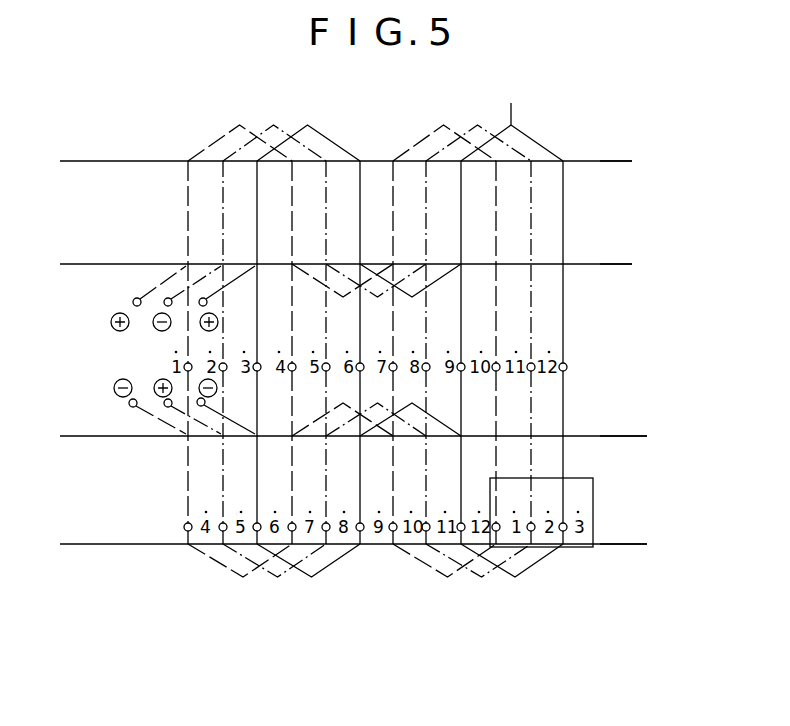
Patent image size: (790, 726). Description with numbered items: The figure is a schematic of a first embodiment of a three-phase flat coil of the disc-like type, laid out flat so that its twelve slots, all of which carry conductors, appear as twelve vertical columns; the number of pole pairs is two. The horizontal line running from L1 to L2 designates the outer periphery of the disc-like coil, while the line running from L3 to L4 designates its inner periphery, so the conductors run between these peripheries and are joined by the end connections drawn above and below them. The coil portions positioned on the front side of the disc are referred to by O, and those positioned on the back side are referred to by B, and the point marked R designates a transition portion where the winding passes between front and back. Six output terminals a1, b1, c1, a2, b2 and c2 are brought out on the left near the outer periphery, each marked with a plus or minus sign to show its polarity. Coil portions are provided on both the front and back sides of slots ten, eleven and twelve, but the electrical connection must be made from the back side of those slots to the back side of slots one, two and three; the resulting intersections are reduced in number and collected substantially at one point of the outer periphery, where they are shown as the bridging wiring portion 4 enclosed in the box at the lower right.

The bridging wiring portion 4 is at (595, 523).
The outer periphery line L1 is at (332, 355).
The outer periphery line L2 is at (638, 350).
The inner periphery line L3 is at (332, 353).
The inner periphery line L4 is at (638, 353).
The output terminal a1 is at (111, 327).
The output terminal b1 is at (153, 328).
The output terminal c1 is at (200, 326).
The output terminal a2 is at (115, 383).
The output terminal b2 is at (155, 383).
The output terminal c2 is at (200, 385).
The front side coil portion O is at (187, 180).
The back side coil portion B is at (292, 172).
The transition portion R is at (547, 197).